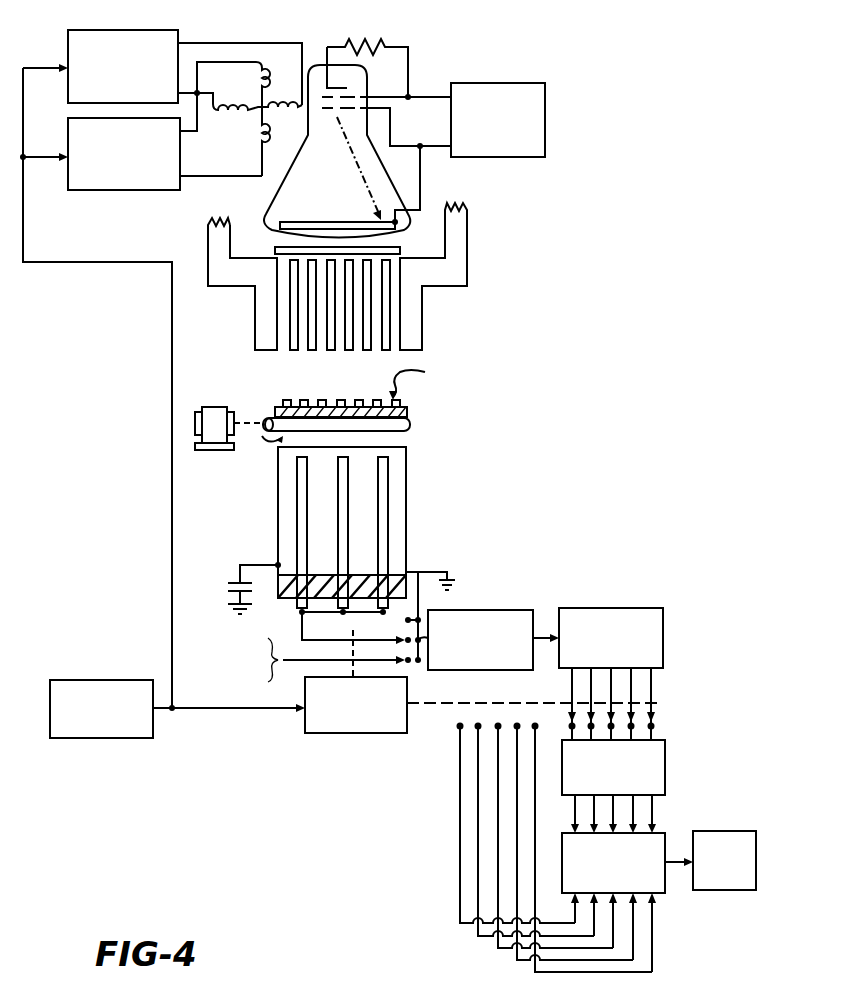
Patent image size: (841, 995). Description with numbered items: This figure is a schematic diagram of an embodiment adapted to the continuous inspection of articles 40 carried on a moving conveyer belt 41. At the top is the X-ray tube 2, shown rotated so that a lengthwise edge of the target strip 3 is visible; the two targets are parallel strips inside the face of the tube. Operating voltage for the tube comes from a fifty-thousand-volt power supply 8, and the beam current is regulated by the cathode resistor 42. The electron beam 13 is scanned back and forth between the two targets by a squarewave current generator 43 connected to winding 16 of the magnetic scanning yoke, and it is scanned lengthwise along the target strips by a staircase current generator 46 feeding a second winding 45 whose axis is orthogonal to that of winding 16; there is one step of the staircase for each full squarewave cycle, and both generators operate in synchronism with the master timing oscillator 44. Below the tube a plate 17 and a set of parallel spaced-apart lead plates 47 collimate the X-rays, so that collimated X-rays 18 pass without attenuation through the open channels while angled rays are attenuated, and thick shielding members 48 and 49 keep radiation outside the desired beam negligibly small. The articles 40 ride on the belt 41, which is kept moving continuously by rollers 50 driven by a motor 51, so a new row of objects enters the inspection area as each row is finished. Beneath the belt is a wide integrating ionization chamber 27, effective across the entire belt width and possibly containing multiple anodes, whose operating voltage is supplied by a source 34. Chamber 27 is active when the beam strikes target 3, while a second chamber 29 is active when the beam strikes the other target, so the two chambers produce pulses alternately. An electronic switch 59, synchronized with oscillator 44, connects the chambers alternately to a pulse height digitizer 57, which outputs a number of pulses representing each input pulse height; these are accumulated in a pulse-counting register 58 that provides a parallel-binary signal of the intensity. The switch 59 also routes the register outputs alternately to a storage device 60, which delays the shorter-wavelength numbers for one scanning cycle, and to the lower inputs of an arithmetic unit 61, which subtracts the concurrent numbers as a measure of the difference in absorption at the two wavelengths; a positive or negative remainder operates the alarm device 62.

The staircase current generator 46 is at (172, 14).
The squarewave current generator 43 is at (141, 190).
The second winding of the deflection yoke 45 is at (214, 128).
The winding of the magnetic scanning yoke 16 is at (258, 150).
The cathode resistor 42 is at (370, 40).
The 50,000-volt power supply 8 is at (500, 83).
The X-ray tube 2 is at (275, 204).
The electron beam 13 is at (352, 170).
The target strip 3 is at (314, 222).
The collimator plate 17 is at (400, 250).
The shielding member 48 is at (256, 318).
The shielding member 49 is at (416, 313).
The lead plates 47 is at (312, 352).
The collimated X-rays 18 is at (416, 381).
The motor 51 is at (222, 395).
The articles 40 is at (338, 400).
The conveyer belt 41 is at (407, 410).
The rollers 50 is at (410, 428).
The integrating ionization chamber 27 is at (400, 515).
The voltage source 34 is at (230, 585).
The integrating ionization chamber 29 is at (318, 660).
The pulse height digitizer 57 is at (490, 610).
The pulse-counting register 58 is at (622, 608).
The storage device 60 is at (665, 757).
The arithmetic unit 61 is at (665, 887).
The alarm device 62 is at (722, 832).
The master timing oscillator 44 is at (122, 660).
The electronic switch 59 is at (332, 733).